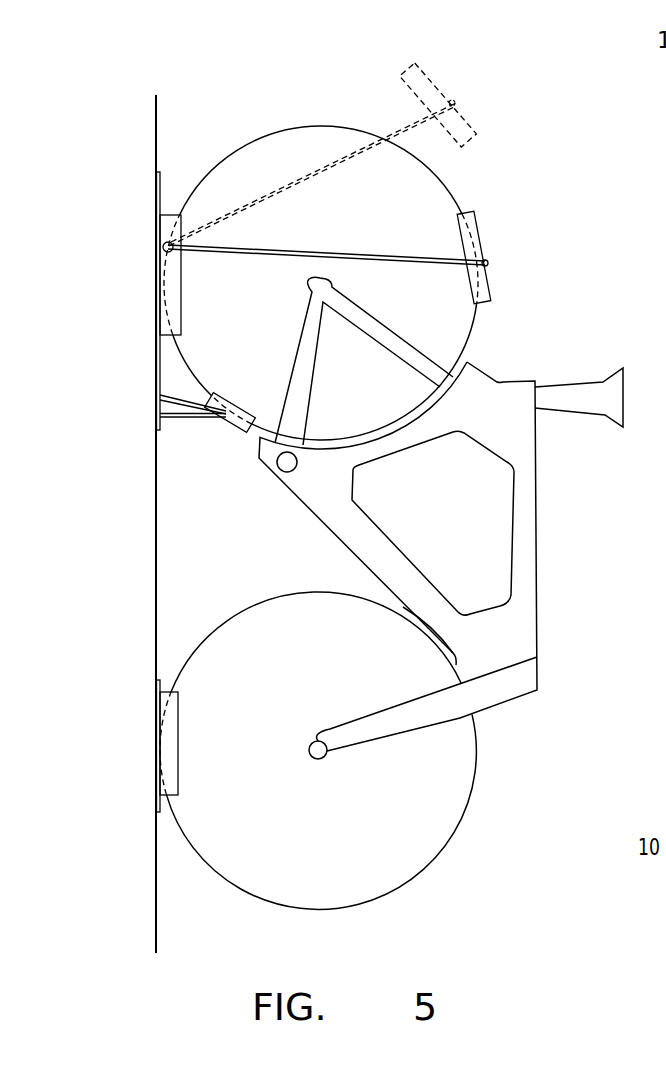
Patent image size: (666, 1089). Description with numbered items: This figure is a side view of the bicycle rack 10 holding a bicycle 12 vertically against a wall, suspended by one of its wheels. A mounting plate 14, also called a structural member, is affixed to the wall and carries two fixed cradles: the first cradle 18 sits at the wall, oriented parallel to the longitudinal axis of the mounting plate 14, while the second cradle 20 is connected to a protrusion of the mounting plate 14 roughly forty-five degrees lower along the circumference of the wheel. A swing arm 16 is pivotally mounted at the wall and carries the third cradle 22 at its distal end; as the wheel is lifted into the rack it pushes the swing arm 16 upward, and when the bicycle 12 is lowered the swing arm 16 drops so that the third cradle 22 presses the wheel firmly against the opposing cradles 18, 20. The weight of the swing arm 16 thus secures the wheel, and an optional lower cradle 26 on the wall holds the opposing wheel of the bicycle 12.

The bicycle rack 10 is at (112, 151).
The bicycle 12 is at (567, 589).
The mounting plate 14 is at (131, 238).
The swing arm 16 is at (303, 235).
The first cradle 18 is at (149, 305).
The second cradle 20 is at (228, 426).
The third cradle 22 is at (502, 288).
The lower cradle 26 is at (149, 767).